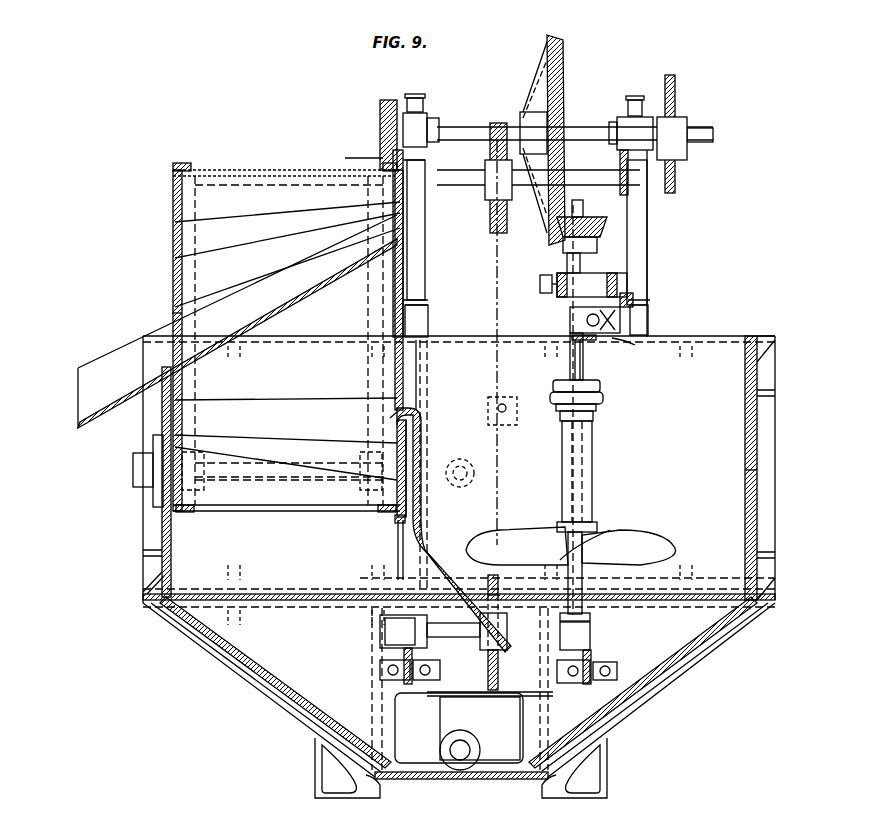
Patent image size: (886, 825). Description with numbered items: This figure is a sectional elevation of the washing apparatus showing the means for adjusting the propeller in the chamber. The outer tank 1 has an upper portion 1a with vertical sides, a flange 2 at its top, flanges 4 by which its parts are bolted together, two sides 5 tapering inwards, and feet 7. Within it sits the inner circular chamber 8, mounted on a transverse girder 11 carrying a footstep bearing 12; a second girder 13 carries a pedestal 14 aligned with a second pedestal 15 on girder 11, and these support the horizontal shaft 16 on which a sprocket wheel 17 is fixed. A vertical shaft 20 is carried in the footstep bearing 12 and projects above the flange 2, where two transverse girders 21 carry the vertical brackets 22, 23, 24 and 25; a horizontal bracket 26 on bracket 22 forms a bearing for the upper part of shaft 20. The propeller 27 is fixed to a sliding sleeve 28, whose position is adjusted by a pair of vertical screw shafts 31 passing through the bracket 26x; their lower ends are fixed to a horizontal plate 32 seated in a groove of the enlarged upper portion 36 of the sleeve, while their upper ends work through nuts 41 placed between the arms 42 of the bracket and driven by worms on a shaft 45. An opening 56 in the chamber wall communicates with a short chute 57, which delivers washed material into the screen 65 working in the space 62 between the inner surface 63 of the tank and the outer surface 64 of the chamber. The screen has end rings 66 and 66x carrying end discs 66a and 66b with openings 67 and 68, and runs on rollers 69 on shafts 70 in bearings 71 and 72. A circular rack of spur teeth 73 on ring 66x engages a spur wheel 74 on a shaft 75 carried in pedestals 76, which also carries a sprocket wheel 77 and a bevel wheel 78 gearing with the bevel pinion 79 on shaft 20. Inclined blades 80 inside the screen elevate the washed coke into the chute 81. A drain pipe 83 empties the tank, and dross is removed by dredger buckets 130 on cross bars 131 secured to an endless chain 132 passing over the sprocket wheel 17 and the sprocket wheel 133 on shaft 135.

The outer tank 1 is at (147, 535).
The upper portion of the tank 1a is at (758, 456).
The flange 2 is at (264, 338).
The flanges 4 is at (145, 595).
The tapering sides 5 is at (246, 666).
The feet 7 is at (461, 768).
The inner circular chamber 8 is at (745, 468).
The transverse girder 11 is at (580, 685).
The footstep bearing 12 is at (590, 614).
The second girder 13 is at (395, 686).
The pedestal 14 is at (403, 631).
The second pedestal 15 is at (575, 636).
The horizontal shaft 16 is at (467, 631).
The sprocket wheel 17 is at (488, 580).
The vertical shaft 20 is at (584, 205).
The transverse girders 21 is at (425, 318).
The vertical bracket 22 is at (645, 275).
The vertical bracket 23 is at (412, 285).
The vertical bracket 24 is at (648, 230).
The vertical bracket 25 is at (425, 242).
The horizontal bracket 26 is at (583, 276).
The bracket 26x is at (597, 348).
The propeller 27 is at (571, 546).
The sliding sleeve 28 is at (590, 466).
The vertical screw shafts 31 is at (574, 368).
The horizontal plate 32 is at (601, 396).
The enlarged upper portion of the sliding sleeve 36 is at (565, 414).
The nut 41 is at (572, 322).
The arms 42 is at (593, 320).
The shaft 45 is at (618, 338).
The opening 56 is at (416, 386).
The chute 57 is at (393, 420).
The space 62 is at (263, 558).
The inner surface of the outer tank 63 is at (165, 585).
The outer surface of the chamber 64 is at (392, 554).
The screen 65 is at (280, 170).
The end ring 66 is at (190, 166).
The end disc 66a is at (182, 228).
The end disc 66b is at (425, 213).
The end ring 66x is at (384, 168).
The opening 67 is at (172, 314).
The opening 68 is at (410, 428).
The rollers 69 is at (200, 505).
The shafts 70 is at (255, 468).
The bearing 71 is at (145, 470).
The bearing 72 is at (410, 490).
The circular rack of spur teeth 73 is at (393, 160).
The spur wheel 74 is at (390, 100).
The shaft 75 is at (382, 118).
The pedestals 76 is at (420, 128).
The sprocket wheel 77 is at (676, 94).
The bevel wheel 78 is at (563, 50).
The bevel pinion 79 is at (562, 238).
The inclined blades 80 is at (286, 339).
The chute 81 is at (239, 321).
The drain pipe 83 is at (465, 750).
The dredger buckets 130 is at (440, 722).
The cross bars 131 is at (432, 694).
The endless chain 132 is at (496, 268).
The sprocket wheel 133 is at (492, 224).
The shaft 135 is at (538, 179).